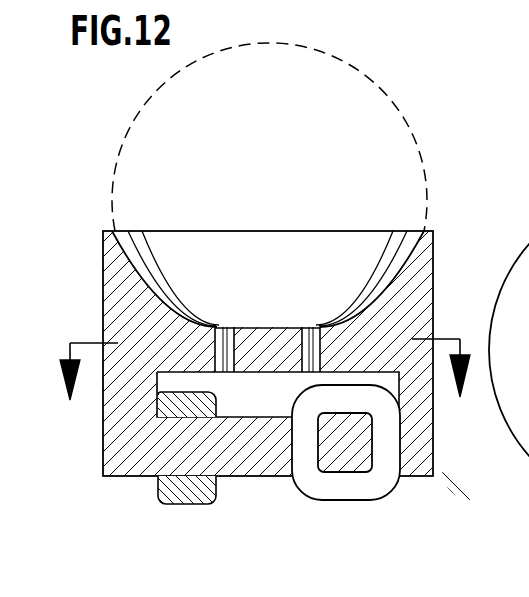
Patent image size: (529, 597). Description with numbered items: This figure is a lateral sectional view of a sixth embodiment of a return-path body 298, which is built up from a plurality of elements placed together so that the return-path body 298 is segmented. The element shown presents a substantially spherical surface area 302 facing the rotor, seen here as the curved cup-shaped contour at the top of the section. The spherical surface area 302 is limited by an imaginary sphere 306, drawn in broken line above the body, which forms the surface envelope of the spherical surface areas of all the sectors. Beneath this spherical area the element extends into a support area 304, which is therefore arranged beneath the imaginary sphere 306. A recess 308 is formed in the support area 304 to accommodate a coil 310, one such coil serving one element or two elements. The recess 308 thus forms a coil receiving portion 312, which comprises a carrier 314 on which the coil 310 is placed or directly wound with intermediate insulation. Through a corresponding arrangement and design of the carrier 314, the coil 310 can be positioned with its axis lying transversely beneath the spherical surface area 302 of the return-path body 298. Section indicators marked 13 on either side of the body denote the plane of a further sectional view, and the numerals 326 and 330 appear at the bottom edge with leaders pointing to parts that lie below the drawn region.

The return-path body 298 is at (461, 124).
The spherical surface area 302 is at (162, 268).
The support area 304 is at (112, 395).
The imaginary sphere 306 is at (387, 280).
The recess 308 is at (233, 397).
The coil 310 is at (173, 490).
The coil receiving portion 312 is at (114, 508).
The carrier 314 is at (223, 457).
The heat sink 326 is at (345, 596).
The mounting board 330 is at (305, 596).
The section line 13- 13 is at (265, 349).